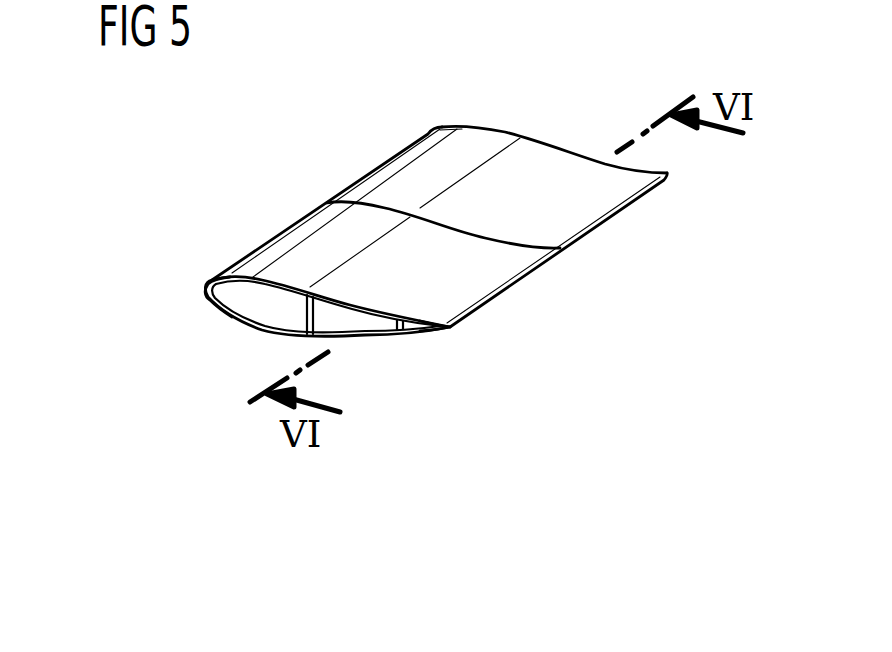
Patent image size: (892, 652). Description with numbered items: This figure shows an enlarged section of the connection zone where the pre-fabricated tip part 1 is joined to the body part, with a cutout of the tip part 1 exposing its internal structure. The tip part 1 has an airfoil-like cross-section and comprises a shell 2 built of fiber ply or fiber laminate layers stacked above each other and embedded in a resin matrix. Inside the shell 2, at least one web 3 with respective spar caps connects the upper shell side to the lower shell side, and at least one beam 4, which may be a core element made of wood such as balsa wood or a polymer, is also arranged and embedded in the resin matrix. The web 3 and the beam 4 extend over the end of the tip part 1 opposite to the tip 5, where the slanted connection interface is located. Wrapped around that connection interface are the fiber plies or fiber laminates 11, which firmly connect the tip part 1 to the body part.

The tip part 1 is at (297, 221).
The fiber plies or fiber laminates 11 is at (482, 140).
The shell 2 is at (206, 300).
The web 3 is at (303, 311).
The beam 4 is at (413, 335).
The tip 5 is at (450, 327).